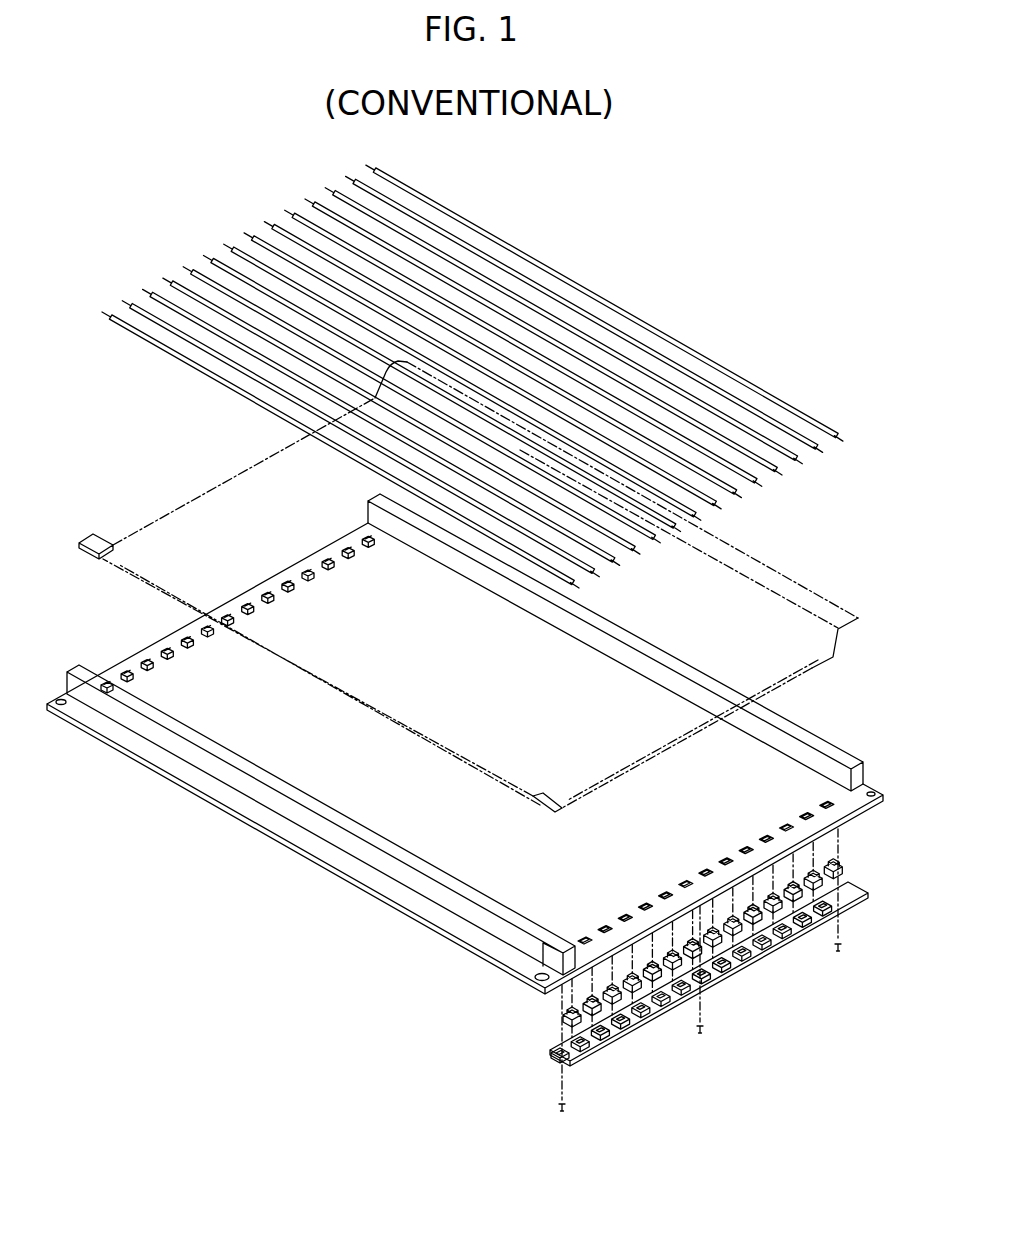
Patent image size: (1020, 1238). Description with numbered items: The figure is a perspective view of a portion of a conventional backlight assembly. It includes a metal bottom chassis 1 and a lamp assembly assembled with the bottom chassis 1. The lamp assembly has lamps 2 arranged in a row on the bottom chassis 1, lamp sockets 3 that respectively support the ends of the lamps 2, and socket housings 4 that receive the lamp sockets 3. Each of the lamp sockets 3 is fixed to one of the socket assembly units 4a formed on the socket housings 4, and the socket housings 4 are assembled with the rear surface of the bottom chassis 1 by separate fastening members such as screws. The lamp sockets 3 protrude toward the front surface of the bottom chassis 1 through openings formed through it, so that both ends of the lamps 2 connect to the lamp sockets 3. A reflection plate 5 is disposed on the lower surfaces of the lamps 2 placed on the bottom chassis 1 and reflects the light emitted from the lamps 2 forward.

The bottom chassis 1 is at (765, 788).
The lamps 2 is at (468, 245).
The lamp sockets 3 is at (820, 885).
The socket housings 4 is at (550, 1051).
The socket assembly units 4a is at (765, 952).
The reflection plate 5 is at (803, 597).